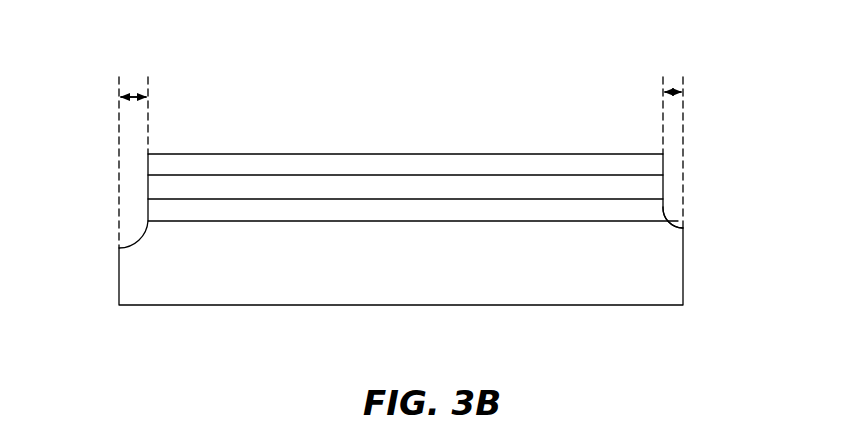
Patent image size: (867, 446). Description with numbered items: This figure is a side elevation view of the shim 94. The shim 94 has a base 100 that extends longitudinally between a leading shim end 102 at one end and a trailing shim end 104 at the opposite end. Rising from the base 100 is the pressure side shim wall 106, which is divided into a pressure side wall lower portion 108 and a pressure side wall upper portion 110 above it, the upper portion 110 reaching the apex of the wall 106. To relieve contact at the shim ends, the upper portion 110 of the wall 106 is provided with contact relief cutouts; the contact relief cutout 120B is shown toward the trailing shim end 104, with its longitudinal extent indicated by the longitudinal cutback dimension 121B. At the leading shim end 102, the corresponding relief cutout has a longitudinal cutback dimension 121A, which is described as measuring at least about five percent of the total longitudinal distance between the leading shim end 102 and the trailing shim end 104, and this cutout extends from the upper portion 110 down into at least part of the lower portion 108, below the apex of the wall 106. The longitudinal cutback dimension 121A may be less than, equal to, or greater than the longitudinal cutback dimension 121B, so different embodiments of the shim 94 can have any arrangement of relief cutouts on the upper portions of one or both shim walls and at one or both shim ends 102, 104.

The shim 94 is at (730, 111).
The base 100 is at (598, 305).
The leading shim end 102 is at (86, 248).
The trailing shim end 104 is at (699, 258).
The pressure side shim wall 106 is at (224, 277).
The pressure side wall lower portion 108 is at (332, 283).
The pressure side wall upper portion 110 is at (585, 185).
The contact relief cutout 120B is at (678, 193).
The longitudinal cutback dimension 121A is at (133, 95).
The longitudinal cutback dimension 121B is at (674, 90).